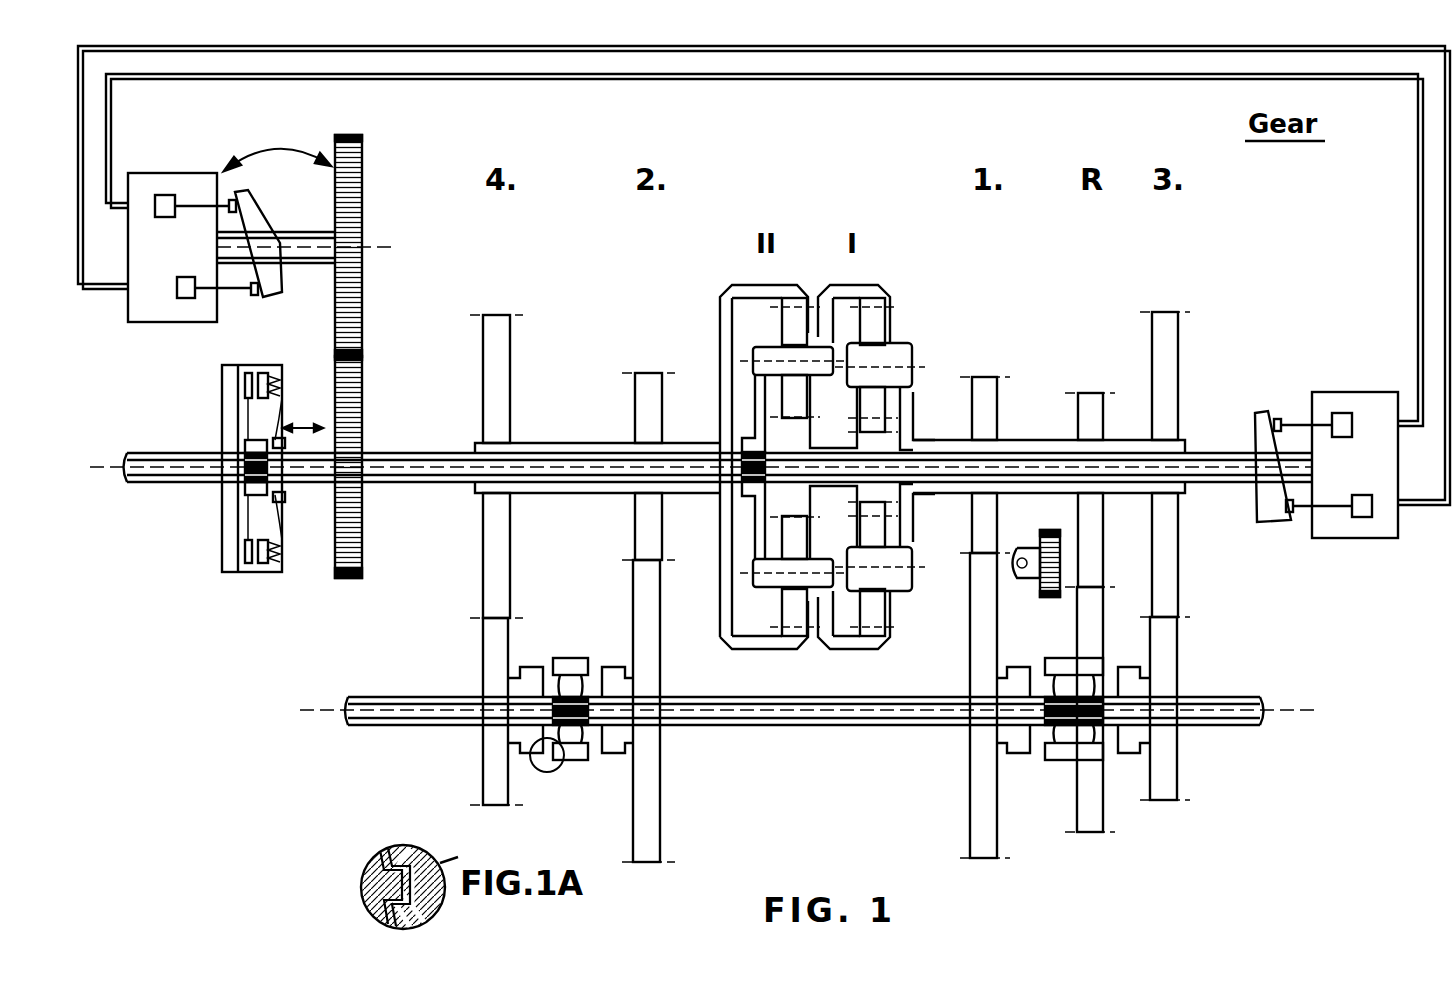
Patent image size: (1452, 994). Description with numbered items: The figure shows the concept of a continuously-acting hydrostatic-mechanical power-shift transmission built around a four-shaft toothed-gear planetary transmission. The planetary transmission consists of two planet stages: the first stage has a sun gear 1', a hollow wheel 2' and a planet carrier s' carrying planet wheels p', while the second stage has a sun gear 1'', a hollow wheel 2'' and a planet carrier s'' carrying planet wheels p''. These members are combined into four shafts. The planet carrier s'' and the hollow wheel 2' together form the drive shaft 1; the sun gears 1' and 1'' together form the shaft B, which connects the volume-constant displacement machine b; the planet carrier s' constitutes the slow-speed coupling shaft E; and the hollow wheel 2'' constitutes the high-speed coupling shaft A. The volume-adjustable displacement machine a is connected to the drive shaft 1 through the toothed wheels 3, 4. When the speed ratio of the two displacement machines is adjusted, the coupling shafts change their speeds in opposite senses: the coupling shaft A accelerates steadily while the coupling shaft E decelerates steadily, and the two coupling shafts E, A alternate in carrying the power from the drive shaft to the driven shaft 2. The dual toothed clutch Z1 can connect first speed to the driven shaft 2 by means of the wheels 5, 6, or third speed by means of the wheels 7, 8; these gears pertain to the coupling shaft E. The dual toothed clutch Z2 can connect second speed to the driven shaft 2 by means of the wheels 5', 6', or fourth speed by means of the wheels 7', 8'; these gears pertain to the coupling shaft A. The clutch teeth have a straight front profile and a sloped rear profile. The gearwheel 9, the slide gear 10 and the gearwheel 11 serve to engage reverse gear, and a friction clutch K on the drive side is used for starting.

The drive shaft 1 is at (417, 536).
The driven shaft 2 is at (810, 667).
The toothed wheel 3 is at (346, 580).
The toothed wheel 4 is at (362, 147).
The first-speed gear wheel 5 is at (999, 413).
The second-speed gear wheel 5' is at (611, 464).
The first-speed gear wheel 6 is at (949, 705).
The second-speed gear wheel 6' is at (684, 711).
The third-speed gear wheel 7 is at (1207, 432).
The fourth-speed gear wheel 7' is at (534, 449).
The third-speed gear wheel 8 is at (1208, 725).
The fourth-speed gear wheel 8' is at (452, 718).
The gearwheel 9 is at (1093, 398).
The slide gear 10 is at (1047, 597).
The gearwheel 11 is at (1095, 805).
The volume-adjustable displacement machine a is at (170, 323).
The volume-constant displacement machine b is at (1355, 392).
The friction clutch K is at (272, 489).
The high-speed coupling shaft A is at (578, 488).
The shaft B is at (1210, 455).
The slow-speed coupling shaft E is at (1023, 440).
The dual toothed clutch Z1 is at (1076, 772).
The dual toothed clutch Z2 is at (540, 775).
The hollow wheel 2' is at (878, 450).
The hollow wheel 2'' is at (740, 448).
The planet wheels p' is at (898, 467).
The planet wheels p'' is at (748, 466).
The planet carrier S' is at (900, 467).
The planet carrier S'' is at (753, 462).
The sun gear 1' is at (878, 467).
The sun gear 1'' is at (828, 467).